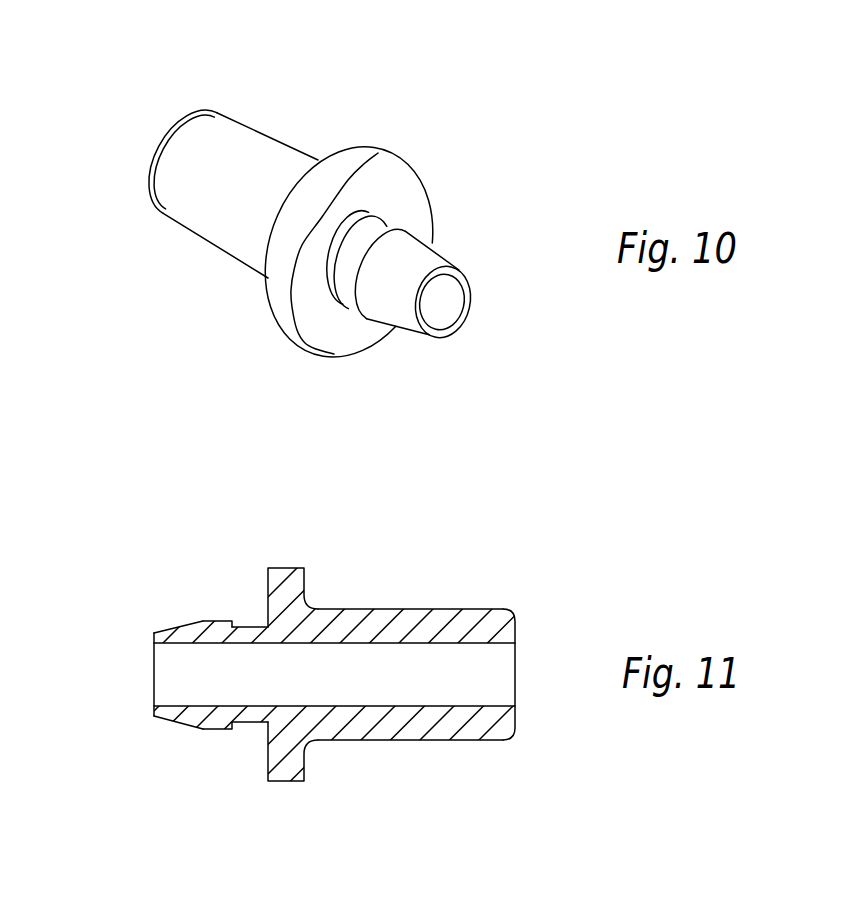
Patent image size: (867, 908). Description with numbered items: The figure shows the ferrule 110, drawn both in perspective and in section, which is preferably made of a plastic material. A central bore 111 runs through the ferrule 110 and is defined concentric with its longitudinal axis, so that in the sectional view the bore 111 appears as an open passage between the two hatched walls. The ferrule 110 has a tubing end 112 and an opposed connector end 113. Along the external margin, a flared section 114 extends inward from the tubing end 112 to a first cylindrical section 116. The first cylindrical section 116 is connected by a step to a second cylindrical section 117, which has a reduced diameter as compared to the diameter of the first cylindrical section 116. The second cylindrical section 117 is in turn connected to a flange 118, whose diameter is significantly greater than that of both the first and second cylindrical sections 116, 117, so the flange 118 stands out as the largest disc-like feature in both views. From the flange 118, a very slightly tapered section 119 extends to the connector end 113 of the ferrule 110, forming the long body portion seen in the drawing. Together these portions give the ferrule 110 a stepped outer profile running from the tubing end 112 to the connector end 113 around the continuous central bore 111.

In FIG. 10, the ferrule 110 is at (136, 181).
In FIG. 11, the ferrule 110 is at (153, 610).
In FIG. 10, the central bore 111 is at (449, 319).
In FIG. 11, the central bore 111 is at (400, 697).
In FIG. 10, the tubing end 112 is at (472, 283).
In FIG. 11, the tubing end 112 is at (158, 703).
In FIG. 11, the connector end 113 is at (512, 713).
In FIG. 10, the flared section 114 is at (400, 317).
In FIG. 11, the flared section 114 is at (185, 722).
In FIG. 10, the first cylindrical section 116 is at (398, 224).
In FIG. 11, the first cylindrical section 116 is at (221, 621).
In FIG. 10, the second cylindrical section 117 is at (373, 229).
In FIG. 11, the second cylindrical section 117 is at (247, 723).
In FIG. 10, the flange 118 is at (292, 325).
In FIG. 11, the flange 118 is at (294, 568).
In FIG. 10, the tapered section 119 is at (197, 242).
In FIG. 11, the tapered section 119 is at (343, 741).